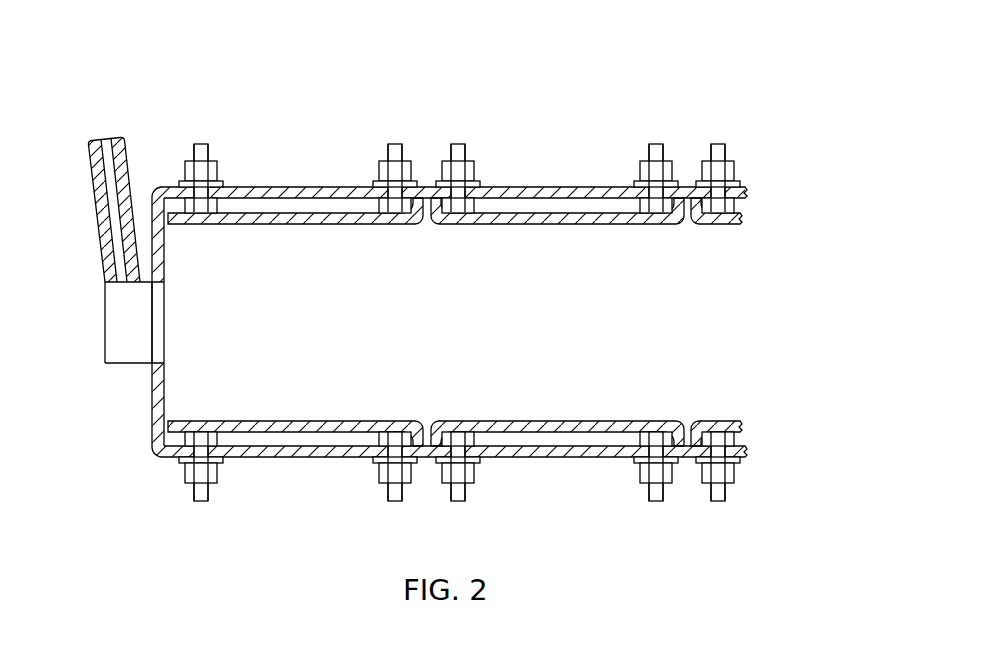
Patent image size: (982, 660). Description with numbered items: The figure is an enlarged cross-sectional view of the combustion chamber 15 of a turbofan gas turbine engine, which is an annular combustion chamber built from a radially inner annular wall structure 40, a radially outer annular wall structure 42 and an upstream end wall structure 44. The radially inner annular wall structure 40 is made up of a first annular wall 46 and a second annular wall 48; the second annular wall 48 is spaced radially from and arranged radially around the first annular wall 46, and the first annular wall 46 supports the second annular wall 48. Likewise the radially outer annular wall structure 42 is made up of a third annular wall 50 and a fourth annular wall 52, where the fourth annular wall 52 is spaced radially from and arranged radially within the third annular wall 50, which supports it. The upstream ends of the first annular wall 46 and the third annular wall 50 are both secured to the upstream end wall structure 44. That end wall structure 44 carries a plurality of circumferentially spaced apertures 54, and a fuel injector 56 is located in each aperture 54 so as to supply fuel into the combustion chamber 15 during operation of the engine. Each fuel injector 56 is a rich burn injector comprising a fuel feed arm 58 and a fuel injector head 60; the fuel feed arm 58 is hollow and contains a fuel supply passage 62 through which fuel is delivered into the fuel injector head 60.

The combustion chamber 15 is at (607, 114).
The radially inner annular wall structure 40 is at (492, 441).
The radially outer annular wall structure 42 is at (492, 203).
The upstream end wall structure 44 is at (157, 403).
The first annular wall 46 is at (592, 458).
The second annular wall 48 is at (632, 421).
The third annular wall 50 is at (623, 187).
The fourth annular wall 52 is at (623, 213).
The aperture 54 is at (155, 282).
The fuel injector 56 is at (113, 330).
The fuel feed arm 58 is at (95, 188).
The fuel injector head 60 is at (132, 350).
The fuel supply passage 62 is at (103, 239).